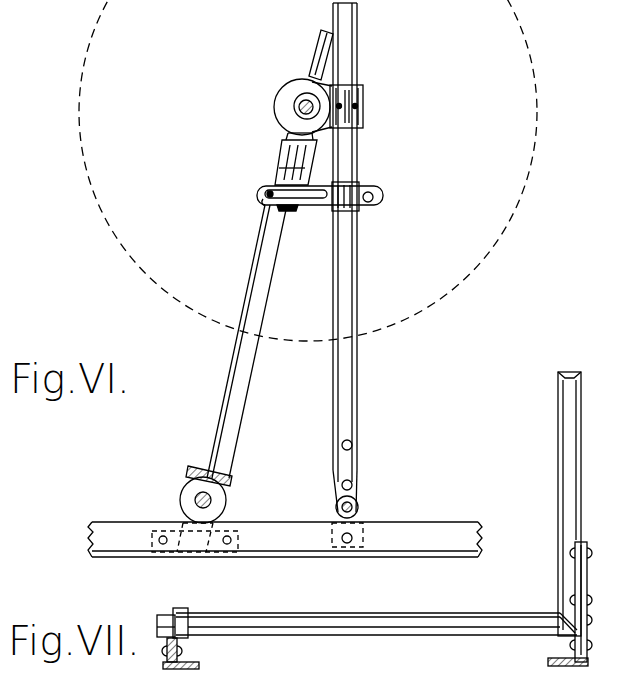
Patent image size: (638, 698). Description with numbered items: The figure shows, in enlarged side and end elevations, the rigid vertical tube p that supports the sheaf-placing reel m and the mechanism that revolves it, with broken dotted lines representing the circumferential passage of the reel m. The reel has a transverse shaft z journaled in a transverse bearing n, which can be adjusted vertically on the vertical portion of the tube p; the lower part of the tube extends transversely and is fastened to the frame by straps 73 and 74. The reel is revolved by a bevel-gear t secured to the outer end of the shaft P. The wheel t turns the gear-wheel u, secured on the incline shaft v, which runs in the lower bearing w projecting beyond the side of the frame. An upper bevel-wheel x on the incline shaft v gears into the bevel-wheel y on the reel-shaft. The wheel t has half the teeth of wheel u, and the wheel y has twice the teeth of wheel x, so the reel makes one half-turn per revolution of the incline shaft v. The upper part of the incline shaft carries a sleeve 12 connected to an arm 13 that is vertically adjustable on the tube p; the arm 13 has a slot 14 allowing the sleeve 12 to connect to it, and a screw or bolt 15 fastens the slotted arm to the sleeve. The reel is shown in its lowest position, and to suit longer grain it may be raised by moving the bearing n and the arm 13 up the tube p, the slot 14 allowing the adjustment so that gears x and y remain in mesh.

In FIG. 6, the reel m is at (80, 107).
In FIG. 6, the vertical tube p is at (359, 506).
In FIG. 7, the vertical tube p is at (572, 412).
In FIG. 6, the bevel-wheel y is at (297, 82).
In FIG. 6, the transverse shaft z is at (301, 100).
In FIG. 6, the transverse bearing n is at (296, 106).
In FIG. 6, the incline shaft v is at (320, 48).
In FIG. 6, the upper bevel-wheel x is at (283, 136).
In FIG. 6, the arm 13 is at (262, 193).
In FIG. 6, the slot 14 is at (312, 200).
In FIG. 6, the sleeve 12 is at (278, 174).
In FIG. 6, the screw or bolt 15 is at (262, 202).
In FIG. 6, the gear-wheel u is at (197, 467).
In FIG. 6, the bevel-gear t is at (228, 501).
In FIG. 6, the shaft P is at (194, 498).
In FIG. 6, the lower bearing w is at (238, 533).
In FIG. 6, the strap 74 is at (344, 432).
In FIG. 7, the strap 74 is at (588, 576).
In FIG. 7, the strap 73 is at (185, 607).